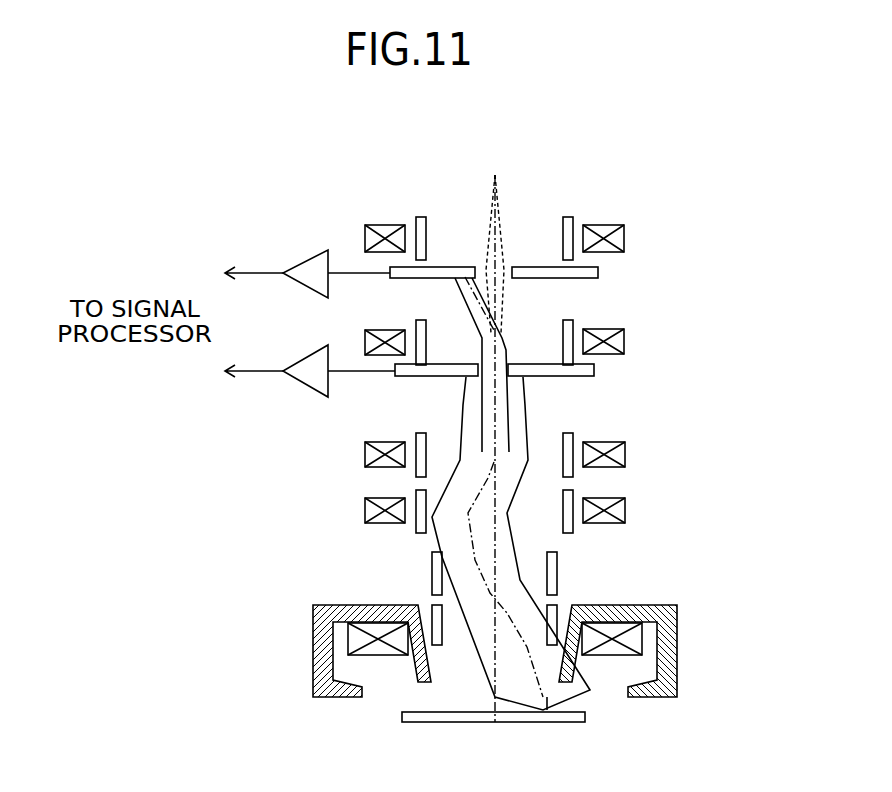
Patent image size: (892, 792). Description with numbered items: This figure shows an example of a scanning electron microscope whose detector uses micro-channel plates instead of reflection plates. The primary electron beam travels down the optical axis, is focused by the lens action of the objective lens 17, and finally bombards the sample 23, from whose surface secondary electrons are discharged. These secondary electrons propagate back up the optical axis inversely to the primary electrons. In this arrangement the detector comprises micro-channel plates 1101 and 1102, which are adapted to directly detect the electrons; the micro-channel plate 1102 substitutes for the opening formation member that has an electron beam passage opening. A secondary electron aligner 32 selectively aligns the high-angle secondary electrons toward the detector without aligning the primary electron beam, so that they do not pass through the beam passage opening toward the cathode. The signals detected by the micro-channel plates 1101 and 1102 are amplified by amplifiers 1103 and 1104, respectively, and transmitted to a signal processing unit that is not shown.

The micro-channel plate 1101 is at (598, 270).
The micro-channel plate 1102 is at (594, 373).
The amplifier 1103 is at (313, 250).
The amplifier 1104 is at (302, 380).
The secondary electron aligner 32 is at (624, 340).
The objective lens 17 is at (313, 638).
The sample 23 is at (400, 717).